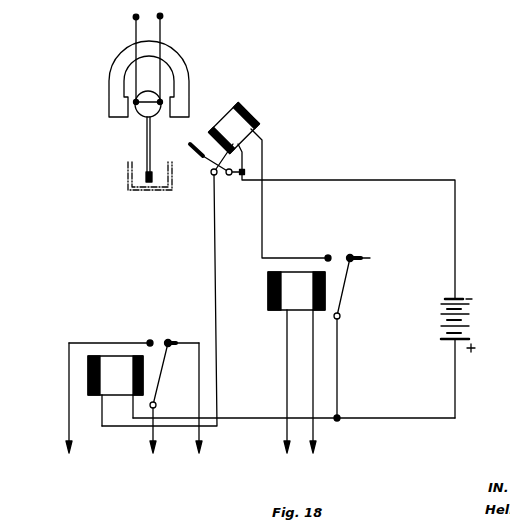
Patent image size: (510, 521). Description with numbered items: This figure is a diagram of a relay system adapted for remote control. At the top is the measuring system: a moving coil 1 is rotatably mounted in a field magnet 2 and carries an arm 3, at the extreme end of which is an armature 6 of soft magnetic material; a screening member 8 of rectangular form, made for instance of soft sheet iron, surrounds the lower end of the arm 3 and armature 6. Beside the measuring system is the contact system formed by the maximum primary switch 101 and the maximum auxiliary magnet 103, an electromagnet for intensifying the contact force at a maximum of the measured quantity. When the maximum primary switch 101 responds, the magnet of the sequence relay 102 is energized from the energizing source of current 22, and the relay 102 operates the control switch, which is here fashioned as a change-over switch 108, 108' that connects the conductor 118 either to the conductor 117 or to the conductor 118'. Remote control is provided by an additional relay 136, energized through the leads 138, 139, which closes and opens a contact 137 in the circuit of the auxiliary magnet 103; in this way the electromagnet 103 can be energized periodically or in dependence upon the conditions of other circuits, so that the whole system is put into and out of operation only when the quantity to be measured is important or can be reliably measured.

The moving coil 1 is at (138, 117).
The field magnet 2 is at (181, 57).
The arm 3 is at (151, 134).
The armature 6 is at (145, 181).
The screening member 8 is at (164, 193).
The energizing source of current 22 is at (466, 323).
The maximum primary switch 101 is at (198, 141).
The sequence relay 102 is at (88, 378).
The maximum auxiliary magnet 103 is at (261, 121).
The control switch 108 is at (118, 361).
The change-over switch contact 108' is at (189, 330).
The terminal conductor 117 is at (70, 431).
The terminal conductor 118 is at (169, 440).
The conductor 118' is at (215, 408).
The additional relay 136 is at (268, 292).
The contact 137 is at (339, 255).
The lead 138 is at (303, 451).
The lead 139 is at (314, 431).